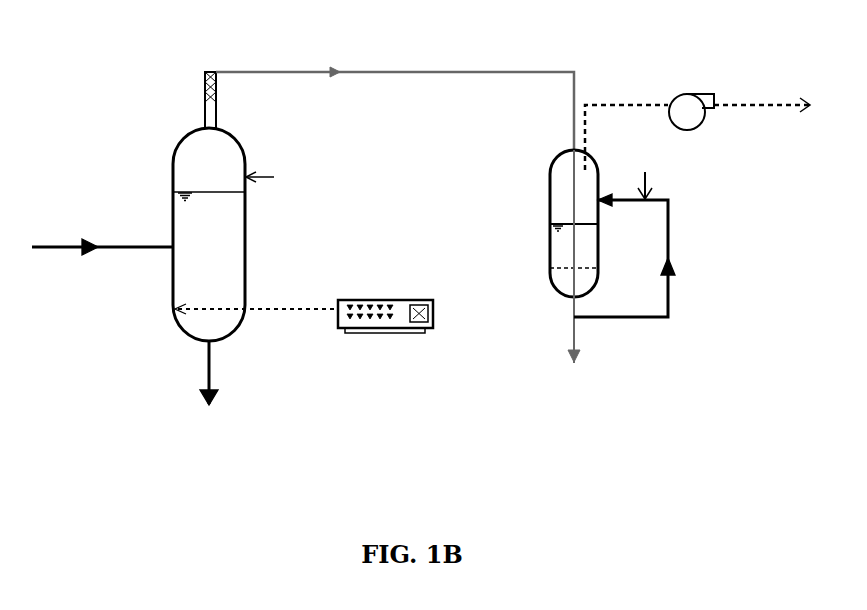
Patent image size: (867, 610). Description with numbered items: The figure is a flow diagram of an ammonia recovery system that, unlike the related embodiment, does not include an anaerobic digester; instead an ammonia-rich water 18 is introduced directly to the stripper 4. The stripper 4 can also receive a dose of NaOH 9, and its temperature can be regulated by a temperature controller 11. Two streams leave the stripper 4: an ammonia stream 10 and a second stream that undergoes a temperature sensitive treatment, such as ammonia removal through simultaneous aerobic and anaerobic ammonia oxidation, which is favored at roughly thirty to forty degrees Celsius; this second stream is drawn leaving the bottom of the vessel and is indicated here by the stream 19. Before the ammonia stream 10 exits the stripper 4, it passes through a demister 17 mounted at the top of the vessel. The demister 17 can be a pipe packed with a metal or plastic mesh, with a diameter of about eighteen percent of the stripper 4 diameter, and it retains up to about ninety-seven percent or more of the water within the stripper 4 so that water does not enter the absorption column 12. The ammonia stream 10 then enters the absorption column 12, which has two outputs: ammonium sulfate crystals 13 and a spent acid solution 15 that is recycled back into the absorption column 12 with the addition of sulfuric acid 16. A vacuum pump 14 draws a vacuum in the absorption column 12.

The stripper 4 is at (209, 234).
The dose of NaOH 9 is at (277, 177).
The ammonia stream 10 is at (395, 87).
The temperature controller 11 is at (304, 337).
The absorption column 12 is at (545, 223).
The (NH4)2SO4 crystals 13 is at (573, 277).
The vacuum pump 14 is at (697, 109).
The spent acid solution 15 is at (649, 255).
The sulfuric acid 16 is at (645, 168).
The demister 17 is at (183, 100).
The ammonia-rich water 18 is at (102, 227).
The bottom outlet 19 is at (179, 373).